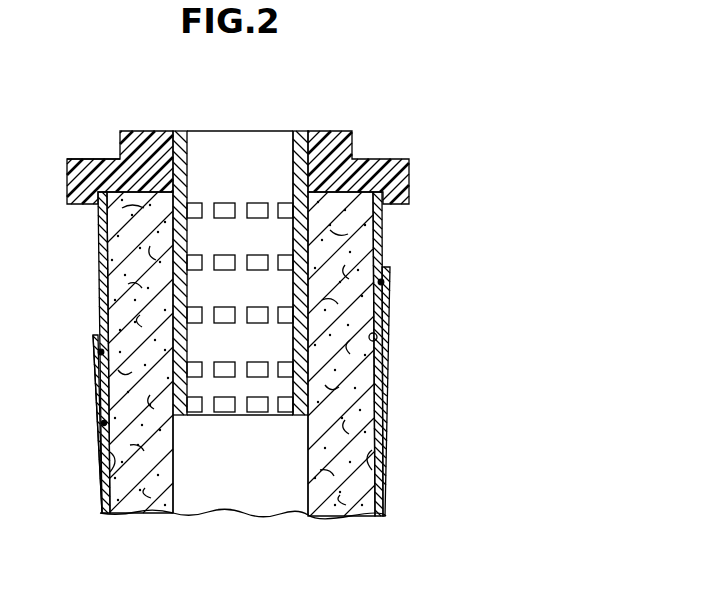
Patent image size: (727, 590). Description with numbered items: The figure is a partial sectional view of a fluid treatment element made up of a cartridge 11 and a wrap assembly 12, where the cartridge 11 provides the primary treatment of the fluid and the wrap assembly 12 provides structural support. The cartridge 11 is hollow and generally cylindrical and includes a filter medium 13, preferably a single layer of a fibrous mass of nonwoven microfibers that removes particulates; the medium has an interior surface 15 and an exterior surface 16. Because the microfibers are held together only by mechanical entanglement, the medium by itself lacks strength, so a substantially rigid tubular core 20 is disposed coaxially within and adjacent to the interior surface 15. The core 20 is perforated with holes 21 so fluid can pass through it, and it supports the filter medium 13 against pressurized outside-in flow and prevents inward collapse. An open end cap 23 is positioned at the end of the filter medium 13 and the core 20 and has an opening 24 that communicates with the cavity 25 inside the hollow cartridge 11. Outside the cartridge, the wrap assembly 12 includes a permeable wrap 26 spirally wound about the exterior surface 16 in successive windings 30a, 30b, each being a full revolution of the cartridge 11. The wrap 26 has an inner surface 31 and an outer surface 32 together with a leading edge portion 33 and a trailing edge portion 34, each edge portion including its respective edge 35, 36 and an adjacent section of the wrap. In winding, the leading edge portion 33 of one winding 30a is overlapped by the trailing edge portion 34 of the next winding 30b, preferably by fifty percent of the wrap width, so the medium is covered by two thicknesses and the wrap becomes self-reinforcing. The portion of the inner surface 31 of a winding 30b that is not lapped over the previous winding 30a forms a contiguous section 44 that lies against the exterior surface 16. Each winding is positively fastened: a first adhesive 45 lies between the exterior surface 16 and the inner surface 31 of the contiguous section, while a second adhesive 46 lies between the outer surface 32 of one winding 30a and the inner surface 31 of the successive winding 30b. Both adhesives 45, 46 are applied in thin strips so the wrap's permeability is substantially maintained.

The cartridge 11 is at (76, 153).
The wrap assembly 12 is at (88, 359).
The filter medium 13 is at (131, 515).
The interior surface 15 is at (175, 465).
The exterior surface 16 is at (100, 300).
The tubular core 20 is at (232, 157).
The holes 21 is at (250, 203).
The open end cap 23 is at (62, 184).
The opening 24 is at (292, 160).
The cavity 25 is at (247, 353).
The permeable wrap 26 is at (93, 398).
The winding 30a is at (107, 268).
The winding 30b is at (386, 428).
The inner surface 31 is at (362, 517).
The outer surface 32 is at (385, 481).
The leading edge portion 33 is at (378, 337).
The trailing edge portion 34 is at (388, 307).
The edge 35 is at (108, 470).
The edge 36 is at (100, 348).
The contiguous section 44 is at (377, 462).
The first adhesive 45 is at (104, 425).
The second adhesive 46 is at (382, 281).